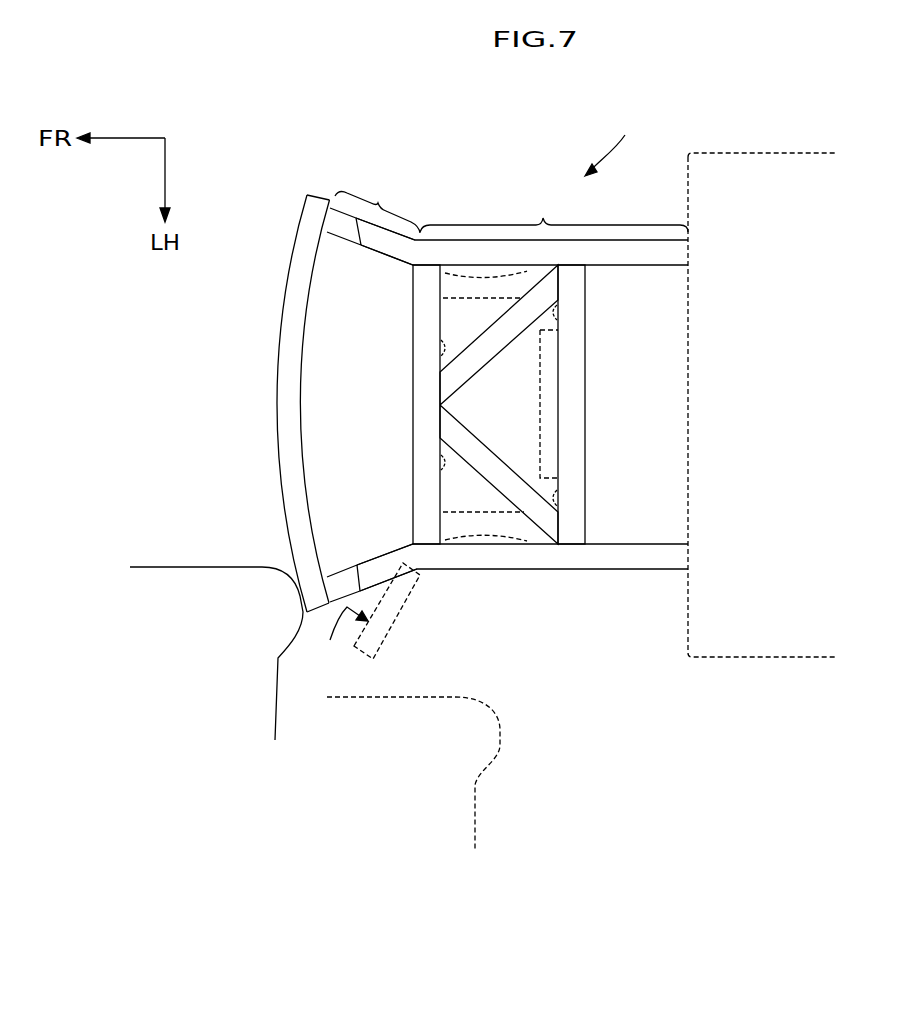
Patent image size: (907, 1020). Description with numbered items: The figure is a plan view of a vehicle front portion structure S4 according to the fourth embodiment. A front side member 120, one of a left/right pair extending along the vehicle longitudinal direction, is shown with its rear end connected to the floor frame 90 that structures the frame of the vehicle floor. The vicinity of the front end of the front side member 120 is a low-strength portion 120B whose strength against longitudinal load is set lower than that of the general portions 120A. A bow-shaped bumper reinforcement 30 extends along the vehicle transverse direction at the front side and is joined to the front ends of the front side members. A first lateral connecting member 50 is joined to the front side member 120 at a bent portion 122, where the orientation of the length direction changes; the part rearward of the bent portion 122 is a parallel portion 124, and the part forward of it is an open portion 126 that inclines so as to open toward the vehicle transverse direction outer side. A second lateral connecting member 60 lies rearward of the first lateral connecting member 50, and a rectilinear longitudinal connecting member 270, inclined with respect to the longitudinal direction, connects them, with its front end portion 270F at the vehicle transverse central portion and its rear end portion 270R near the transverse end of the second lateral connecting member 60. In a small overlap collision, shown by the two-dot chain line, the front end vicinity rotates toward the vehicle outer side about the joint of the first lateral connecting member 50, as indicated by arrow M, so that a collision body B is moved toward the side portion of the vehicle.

The bumper reinforcement 30 is at (276, 388).
The first lateral connecting member 50 is at (413, 381).
The second lateral connecting member 60 is at (585, 398).
The floor frame 90 is at (780, 409).
The front side member 120 is at (506, 192).
The general portion 120A is at (600, 248).
The low-strength portion 120B is at (343, 228).
The bent portion 122 is at (407, 268).
The parallel portion 124 is at (554, 212).
The open portion 126 is at (435, 655).
The longitudinal connecting member 270 is at (476, 339).
The front end portion 270F is at (441, 348).
The rear end portion 270R is at (553, 320).
The collision body B is at (195, 567).
The arrow M is at (344, 636).
The vehicle front portion structure S4 is at (620, 146).